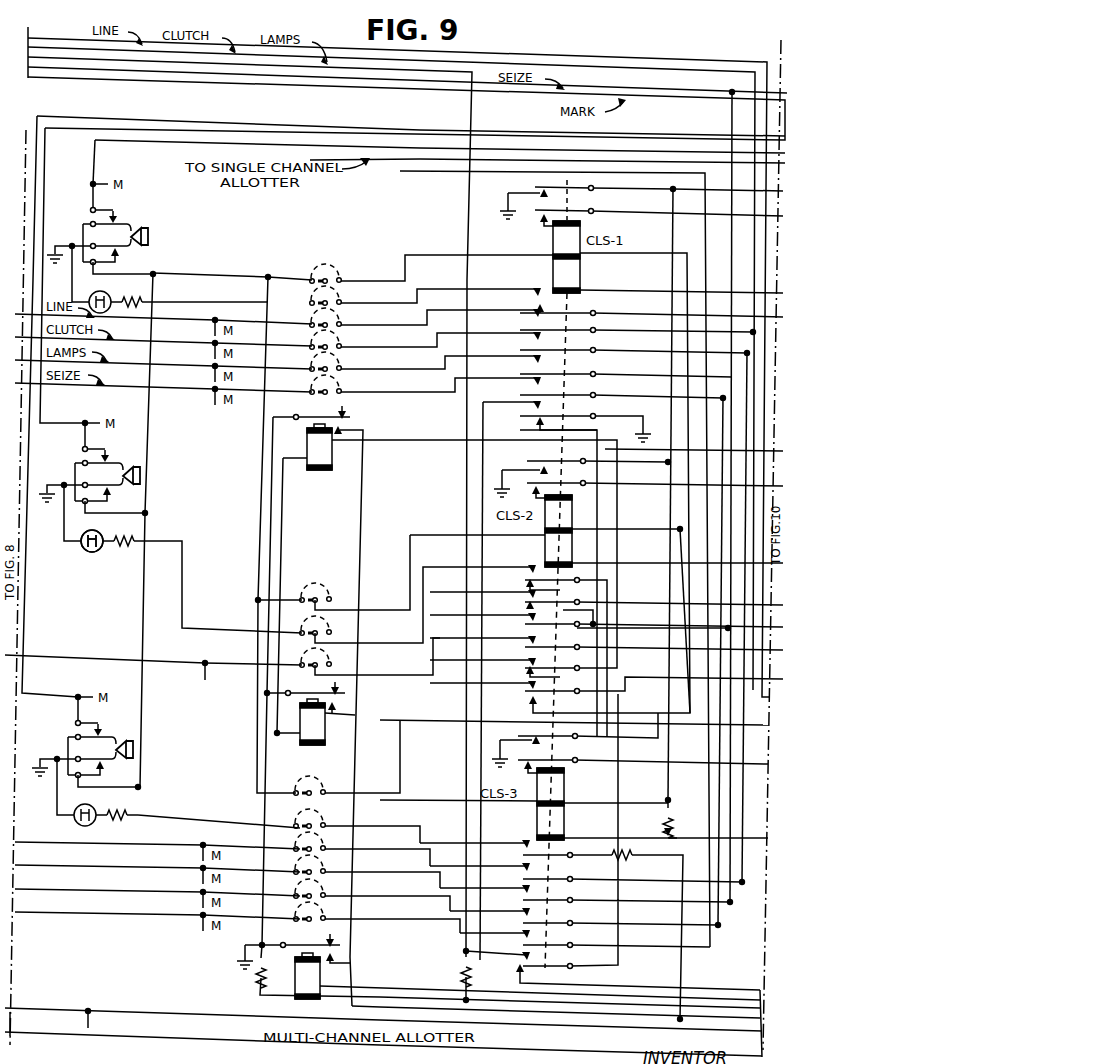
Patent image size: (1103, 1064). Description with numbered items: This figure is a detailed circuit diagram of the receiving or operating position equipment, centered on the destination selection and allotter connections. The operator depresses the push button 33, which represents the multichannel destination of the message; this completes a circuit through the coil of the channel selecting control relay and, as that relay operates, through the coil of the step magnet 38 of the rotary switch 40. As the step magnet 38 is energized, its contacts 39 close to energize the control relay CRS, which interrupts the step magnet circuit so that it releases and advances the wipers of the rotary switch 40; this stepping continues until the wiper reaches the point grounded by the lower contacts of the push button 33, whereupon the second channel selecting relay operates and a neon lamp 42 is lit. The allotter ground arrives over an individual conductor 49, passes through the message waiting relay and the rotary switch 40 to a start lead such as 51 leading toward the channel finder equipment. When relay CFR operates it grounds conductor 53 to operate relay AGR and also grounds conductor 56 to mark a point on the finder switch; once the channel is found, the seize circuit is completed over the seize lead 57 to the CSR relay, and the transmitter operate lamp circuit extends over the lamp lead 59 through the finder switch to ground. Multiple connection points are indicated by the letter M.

The push button 33 is at (114, 478).
The step magnet 38 is at (310, 743).
The contacts 39 is at (350, 698).
The rotary switch 40 is at (318, 585).
The neon lamp 42 is at (96, 553).
The individual conductor 49 is at (358, 1042).
The start lead 51 is at (172, 664).
The conductor 53 is at (232, 1010).
The conductor 56 is at (668, 100).
The seize lead 57 is at (622, 88).
The lamp lead 59 is at (476, 124).